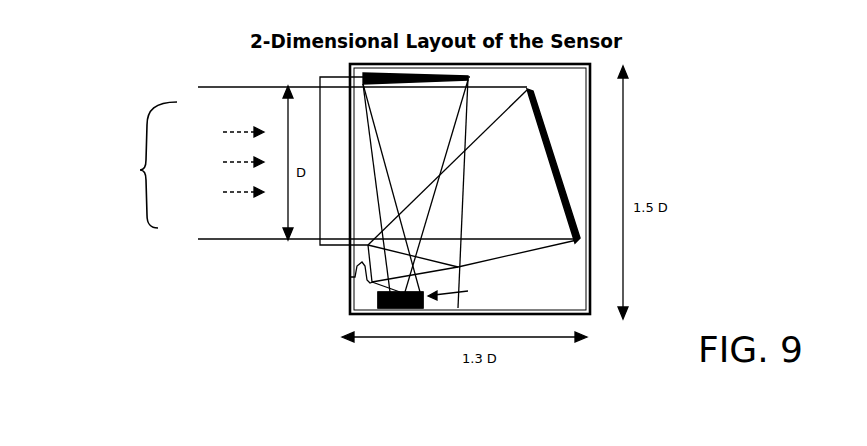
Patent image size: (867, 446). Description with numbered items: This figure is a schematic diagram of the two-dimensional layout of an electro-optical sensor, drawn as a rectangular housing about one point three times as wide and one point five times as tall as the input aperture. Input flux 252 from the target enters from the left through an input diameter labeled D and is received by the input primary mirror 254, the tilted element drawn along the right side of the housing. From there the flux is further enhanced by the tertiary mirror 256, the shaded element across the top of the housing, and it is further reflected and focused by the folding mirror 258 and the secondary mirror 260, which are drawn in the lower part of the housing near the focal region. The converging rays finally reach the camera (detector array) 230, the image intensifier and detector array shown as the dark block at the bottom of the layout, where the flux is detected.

The camera (detector array) 230 is at (378, 295).
The input flux 252 is at (158, 165).
The input primary mirror 254 is at (555, 150).
The tertiary mirror 256 is at (363, 74).
The folding mirror 258 is at (448, 277).
The secondary mirror 260 is at (350, 276).